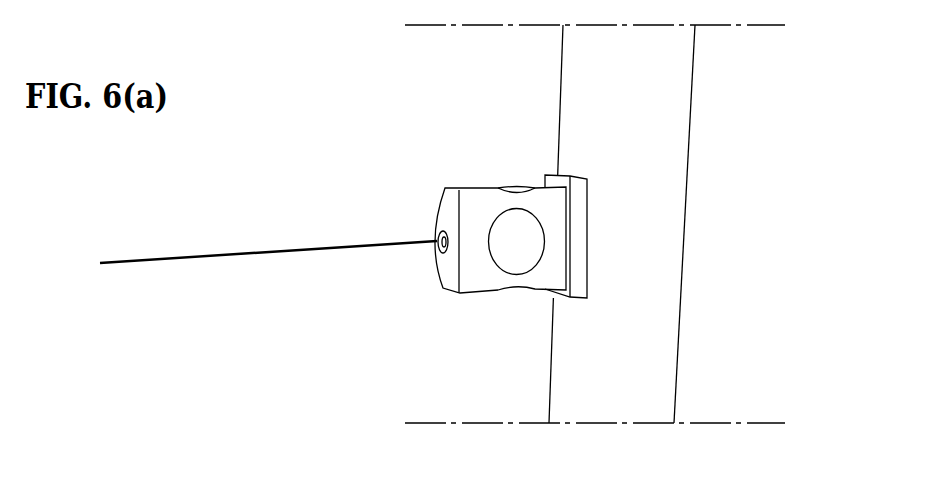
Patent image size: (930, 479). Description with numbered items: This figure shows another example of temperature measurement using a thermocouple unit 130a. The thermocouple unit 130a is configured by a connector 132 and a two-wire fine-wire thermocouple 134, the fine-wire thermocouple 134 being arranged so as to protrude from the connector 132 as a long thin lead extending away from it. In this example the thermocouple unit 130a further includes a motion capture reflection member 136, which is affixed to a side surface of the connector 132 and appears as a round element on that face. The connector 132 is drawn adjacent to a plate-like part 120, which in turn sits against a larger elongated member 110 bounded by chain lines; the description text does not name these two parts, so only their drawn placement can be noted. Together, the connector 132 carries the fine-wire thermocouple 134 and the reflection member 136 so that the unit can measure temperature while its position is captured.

The pipe (tubular member) 110 is at (688, 267).
The mounting plate 120 is at (587, 198).
The thermocouple unit 130a is at (457, 234).
The connector 132 is at (477, 287).
The fine-wire thermocouple 134 is at (272, 250).
The motion capture reflection member 136 is at (514, 222).